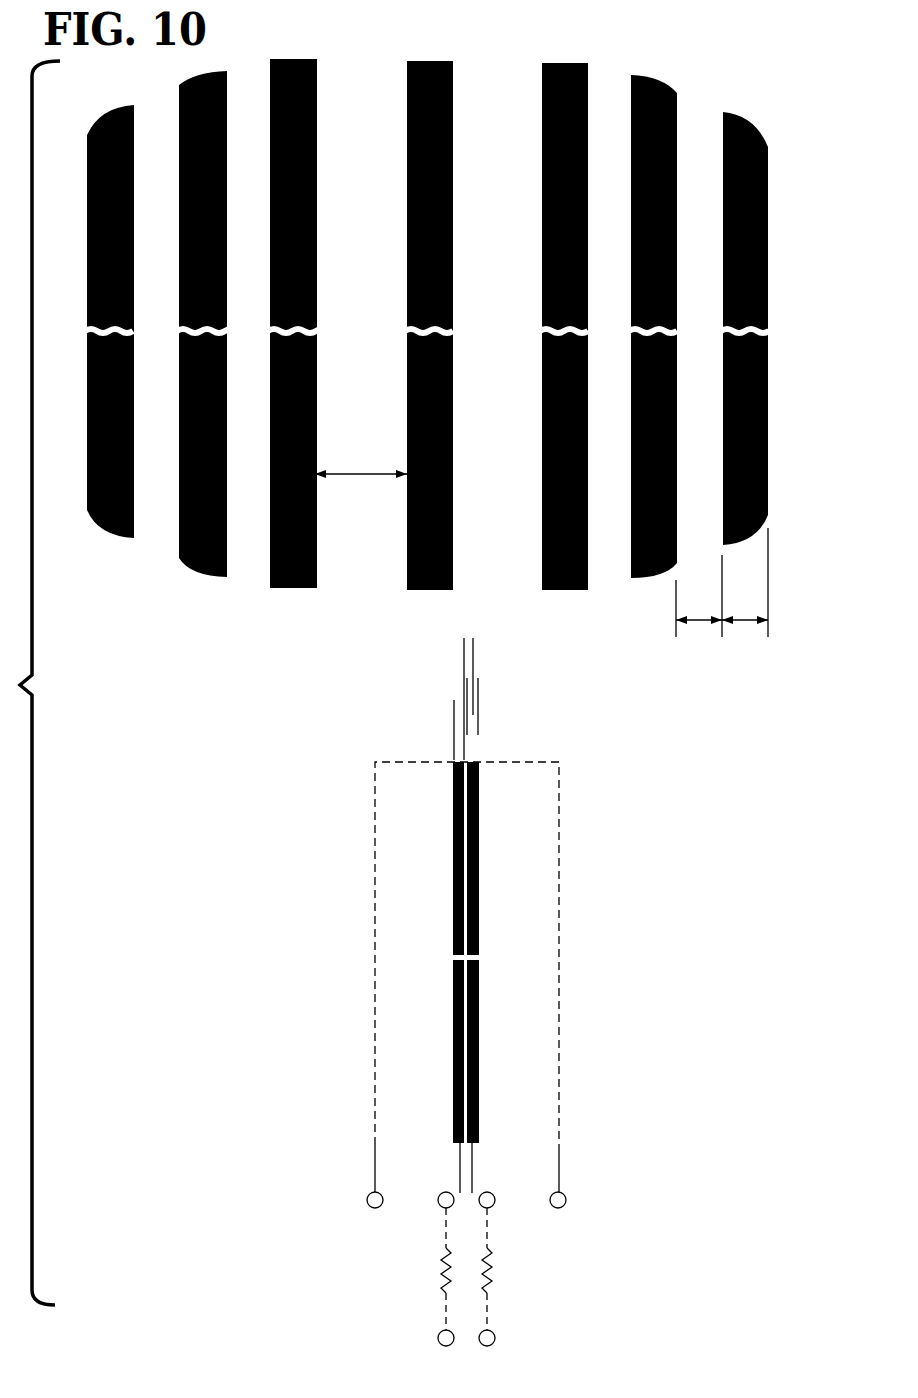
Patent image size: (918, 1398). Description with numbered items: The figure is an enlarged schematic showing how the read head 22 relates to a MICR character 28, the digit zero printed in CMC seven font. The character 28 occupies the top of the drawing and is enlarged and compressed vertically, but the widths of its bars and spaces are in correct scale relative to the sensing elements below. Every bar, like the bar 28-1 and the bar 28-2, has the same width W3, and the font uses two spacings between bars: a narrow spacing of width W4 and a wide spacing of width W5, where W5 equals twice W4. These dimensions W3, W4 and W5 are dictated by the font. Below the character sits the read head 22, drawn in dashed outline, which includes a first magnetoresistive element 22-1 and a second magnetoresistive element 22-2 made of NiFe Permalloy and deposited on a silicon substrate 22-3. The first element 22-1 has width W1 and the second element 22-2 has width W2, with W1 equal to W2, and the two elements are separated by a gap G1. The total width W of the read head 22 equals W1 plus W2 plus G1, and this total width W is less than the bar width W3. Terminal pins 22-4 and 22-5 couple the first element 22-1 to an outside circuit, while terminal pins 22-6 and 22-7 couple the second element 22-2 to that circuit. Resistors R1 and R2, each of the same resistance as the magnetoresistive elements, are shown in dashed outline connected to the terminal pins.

The character 28 is at (465, 306).
The bar 28-1 is at (768, 446).
The electrode finger 28-2 is at (657, 80).
The read head 22 is at (463, 1005).
The first magnetoresistive element 22-1 is at (479, 918).
The second magnetoresistive element 22-2 is at (453, 862).
The silicon substrate 22-3 is at (466, 1228).
The terminal pin 22-4 is at (564, 1195).
The terminal pin 22-5 is at (491, 1208).
The terminal pin 22-6 is at (369, 1195).
The terminal pin 22-7 is at (441, 1208).
The resistor R1 is at (490, 1276).
The resistor R2 is at (442, 1272).
The total width W is at (518, 1093).
The width of first magnetoresistive element W1 is at (428, 688).
The width of second magnetoresistive element W2 is at (498, 728).
The bar width W3 is at (768, 620).
The narrow spacing width W4 is at (676, 620).
The wide spacing width W5 is at (358, 472).
The gap G1 is at (428, 650).